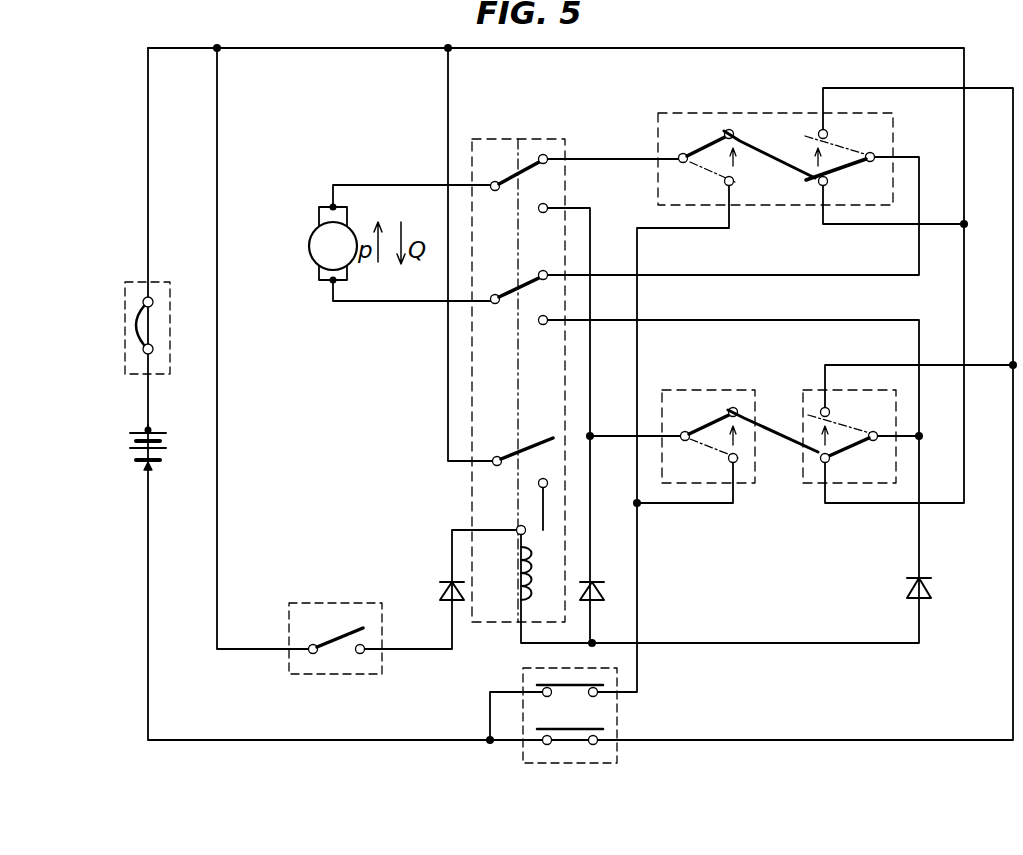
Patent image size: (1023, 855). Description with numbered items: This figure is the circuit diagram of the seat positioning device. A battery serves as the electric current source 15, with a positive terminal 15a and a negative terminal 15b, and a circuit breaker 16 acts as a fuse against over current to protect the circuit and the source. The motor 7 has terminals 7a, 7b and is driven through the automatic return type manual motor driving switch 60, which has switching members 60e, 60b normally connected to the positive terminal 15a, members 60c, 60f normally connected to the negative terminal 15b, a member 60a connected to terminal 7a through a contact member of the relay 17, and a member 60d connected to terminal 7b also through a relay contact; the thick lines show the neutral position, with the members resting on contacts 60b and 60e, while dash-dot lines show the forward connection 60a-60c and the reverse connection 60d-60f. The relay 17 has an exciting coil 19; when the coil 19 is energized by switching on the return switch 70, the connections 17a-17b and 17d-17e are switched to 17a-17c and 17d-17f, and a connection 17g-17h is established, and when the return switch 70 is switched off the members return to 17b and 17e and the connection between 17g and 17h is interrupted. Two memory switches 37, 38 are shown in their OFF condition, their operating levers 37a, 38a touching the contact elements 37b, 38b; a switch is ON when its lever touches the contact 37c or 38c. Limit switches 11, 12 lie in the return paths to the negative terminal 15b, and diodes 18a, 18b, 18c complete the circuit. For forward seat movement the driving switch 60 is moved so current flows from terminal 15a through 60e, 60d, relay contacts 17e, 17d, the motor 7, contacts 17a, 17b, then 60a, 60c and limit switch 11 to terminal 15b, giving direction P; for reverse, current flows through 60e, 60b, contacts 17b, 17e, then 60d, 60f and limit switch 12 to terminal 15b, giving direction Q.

The motor 7 is at (309, 244).
The motor terminal 7a is at (328, 205).
The motor terminal 7b is at (330, 283).
The limit switch 11 is at (523, 678).
The limit switch 12 is at (575, 733).
The electric current source 15 is at (130, 445).
The positive terminal 15a is at (145, 428).
The negative terminal 15b is at (146, 468).
The circuit breaker 16 is at (128, 285).
The relay 17 is at (495, 138).
The relay contact 17a is at (496, 191).
The relay contact 17b is at (545, 155).
The relay contact 17c is at (548, 206).
The relay contact 17d is at (495, 295).
The relay contact 17e is at (548, 258).
The relay contact 17f is at (543, 325).
The relay contact 17g is at (497, 456).
The relay contact 17h is at (538, 487).
The diode 18a is at (909, 590).
The diode 18b is at (604, 590).
The diode 18c is at (421, 581).
The exciting coil 19 is at (515, 568).
The memory switch 37 is at (803, 390).
The operating lever 37a is at (854, 456).
The contact element 37b is at (820, 462).
The contact 37c is at (850, 413).
The memory switch 38 is at (690, 390).
The operating lever 38a is at (697, 423).
The contact element 38b is at (735, 407).
The contact 38c is at (700, 465).
The motor driving switch 60 is at (700, 113).
The switching member 60a is at (680, 153).
The switching member 60b is at (733, 130).
The switching member 60c is at (733, 186).
The switching member 60d is at (875, 155).
The switching member 60e is at (843, 181).
The switching member 60f is at (845, 133).
The return switch 70 is at (318, 603).